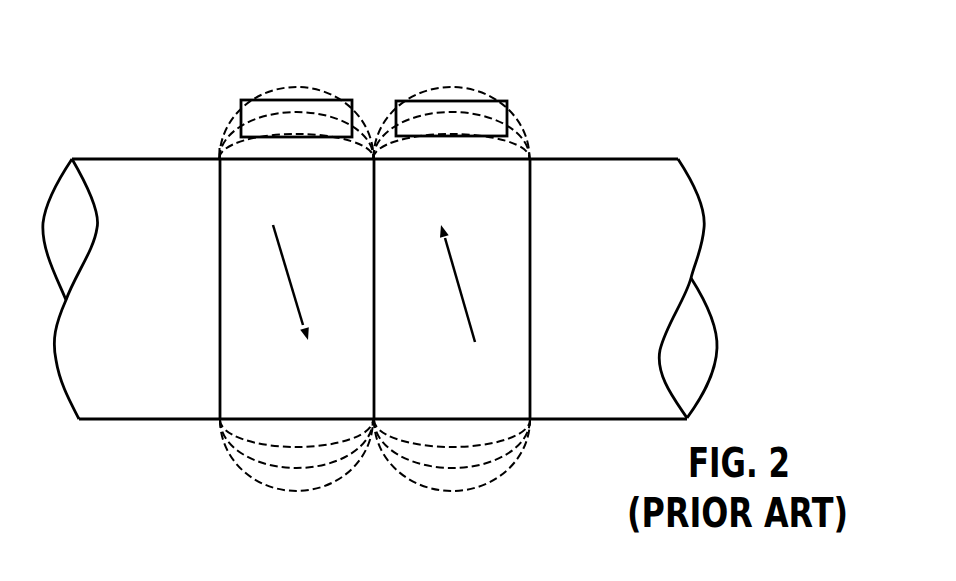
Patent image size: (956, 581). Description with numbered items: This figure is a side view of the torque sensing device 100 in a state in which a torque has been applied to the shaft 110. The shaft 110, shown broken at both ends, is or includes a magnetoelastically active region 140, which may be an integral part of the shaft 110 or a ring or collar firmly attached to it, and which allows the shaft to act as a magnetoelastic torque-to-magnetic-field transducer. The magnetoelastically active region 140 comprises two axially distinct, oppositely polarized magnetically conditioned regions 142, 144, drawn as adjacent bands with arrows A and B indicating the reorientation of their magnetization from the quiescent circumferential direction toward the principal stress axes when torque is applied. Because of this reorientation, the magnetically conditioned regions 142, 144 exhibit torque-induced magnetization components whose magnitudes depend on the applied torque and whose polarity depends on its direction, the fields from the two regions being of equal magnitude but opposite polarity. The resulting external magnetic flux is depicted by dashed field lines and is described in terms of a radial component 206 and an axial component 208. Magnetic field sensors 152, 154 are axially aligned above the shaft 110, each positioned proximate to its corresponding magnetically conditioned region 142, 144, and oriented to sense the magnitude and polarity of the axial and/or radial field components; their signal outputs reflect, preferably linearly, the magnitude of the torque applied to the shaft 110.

The torque sensing device 100 is at (678, 105).
The shaft 110 is at (668, 232).
The magnetoelastically active region 140 is at (373, 492).
The magnetically conditioned region 142 is at (255, 395).
The magnetically conditioned region 144 is at (500, 400).
The magnetic field sensor 152 is at (297, 120).
The magnetic field sensor 154 is at (452, 120).
The radial component 206 is at (219, 155).
The axial component 208 is at (297, 87).